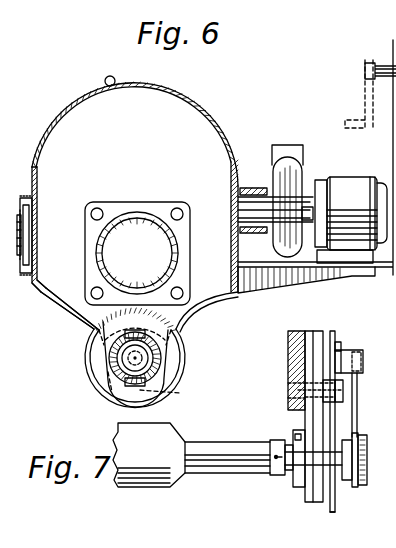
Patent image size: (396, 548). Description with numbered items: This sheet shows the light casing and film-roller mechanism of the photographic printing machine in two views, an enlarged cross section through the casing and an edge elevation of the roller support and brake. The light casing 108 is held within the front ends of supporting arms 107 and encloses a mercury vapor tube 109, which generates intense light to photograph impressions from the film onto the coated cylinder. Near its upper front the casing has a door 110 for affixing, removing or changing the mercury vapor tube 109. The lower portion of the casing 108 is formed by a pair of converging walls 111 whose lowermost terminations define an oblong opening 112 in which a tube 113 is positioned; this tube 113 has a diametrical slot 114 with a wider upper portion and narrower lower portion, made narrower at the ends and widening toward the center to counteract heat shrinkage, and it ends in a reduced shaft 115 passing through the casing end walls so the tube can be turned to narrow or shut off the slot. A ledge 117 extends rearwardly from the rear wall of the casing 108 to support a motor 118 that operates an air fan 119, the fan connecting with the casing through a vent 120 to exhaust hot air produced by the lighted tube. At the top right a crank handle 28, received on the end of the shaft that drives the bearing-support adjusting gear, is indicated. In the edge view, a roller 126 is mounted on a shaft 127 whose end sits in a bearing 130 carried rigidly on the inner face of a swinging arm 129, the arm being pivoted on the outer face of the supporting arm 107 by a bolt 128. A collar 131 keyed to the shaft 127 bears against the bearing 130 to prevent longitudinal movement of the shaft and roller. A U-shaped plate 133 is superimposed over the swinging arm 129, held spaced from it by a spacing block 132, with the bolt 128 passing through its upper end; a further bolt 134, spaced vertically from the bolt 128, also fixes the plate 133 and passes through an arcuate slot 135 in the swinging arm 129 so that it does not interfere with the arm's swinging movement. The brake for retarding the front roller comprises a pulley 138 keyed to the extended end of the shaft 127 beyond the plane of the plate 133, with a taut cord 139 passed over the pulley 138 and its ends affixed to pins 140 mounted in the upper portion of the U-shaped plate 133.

In FIG. 6, the crank handle 28 is at (358, 92).
In FIG. 7, the supporting arm 107 is at (300, 334).
In FIG. 6, the light casing 108 is at (190, 98).
In FIG. 6, the mercury vapor tube 109 is at (137, 222).
In FIG. 6, the door 110 is at (66, 110).
In FIG. 6, the converging walls 111 is at (65, 308).
In FIG. 6, the oblong opening 112 is at (103, 393).
In FIG. 6, the tube 113 is at (110, 358).
In FIG. 6, the diametrical slot 114 is at (172, 333).
In FIG. 6, the reduced shaft 115 is at (165, 388).
In FIG. 6, the ledge 117 is at (348, 276).
In FIG. 6, the motor 118 is at (345, 184).
In FIG. 6, the air fan 119 is at (302, 166).
In FIG. 6, the vent 120 is at (249, 186).
In FIG. 7, the roller 126 is at (132, 482).
In FIG. 7, the shaft 127 is at (205, 474).
In FIG. 7, the bolt 128 is at (341, 345).
In FIG. 7, the swinging arm 129 is at (308, 502).
In FIG. 7, the bearing 130 is at (294, 432).
In FIG. 7, the collar 131 is at (268, 477).
In FIG. 7, the spacing block 132 is at (327, 334).
In FIG. 7, the U-shaped plate 133 is at (332, 508).
In FIG. 7, the bolt 134 is at (343, 390).
In FIG. 7, the arcuate slot 135 is at (287, 368).
In FIG. 7, the pulley 138 is at (367, 453).
In FIG. 7, the cord 139 is at (357, 407).
In FIG. 7, the pin 140 is at (370, 350).